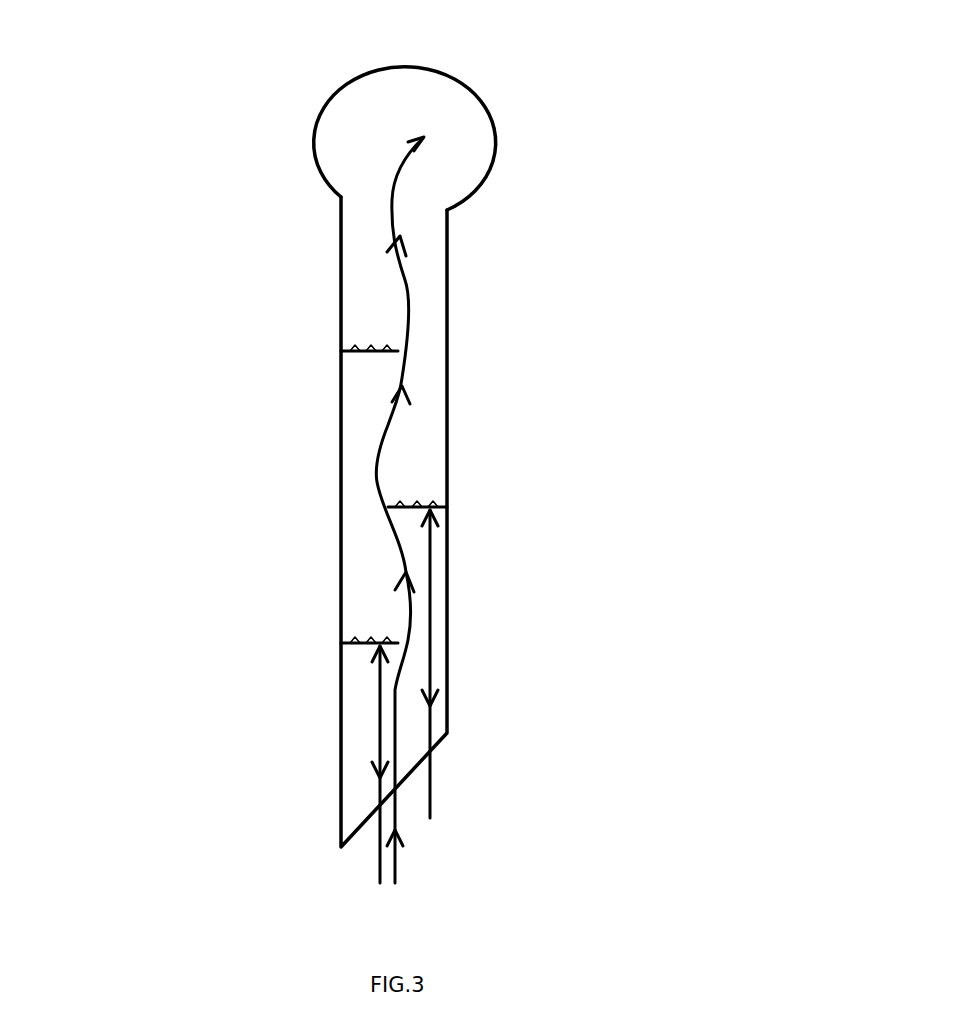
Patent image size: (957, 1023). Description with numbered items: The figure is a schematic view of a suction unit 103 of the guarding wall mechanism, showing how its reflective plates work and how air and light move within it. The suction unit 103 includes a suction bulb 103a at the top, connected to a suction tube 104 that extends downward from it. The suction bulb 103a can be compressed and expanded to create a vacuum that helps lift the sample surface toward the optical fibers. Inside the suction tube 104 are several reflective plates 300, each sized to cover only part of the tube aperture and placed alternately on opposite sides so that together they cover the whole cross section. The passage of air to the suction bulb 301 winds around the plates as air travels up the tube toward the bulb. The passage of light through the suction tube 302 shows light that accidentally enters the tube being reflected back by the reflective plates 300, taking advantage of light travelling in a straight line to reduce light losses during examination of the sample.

The suction unit 103 is at (243, 168).
The suction bulb 103a is at (490, 131).
The reflective plate 300 is at (343, 348).
The passage of air to the suction bulb 301 is at (408, 319).
The suction tube 104 is at (448, 566).
The passage of light through the suction tube 302 is at (378, 719).